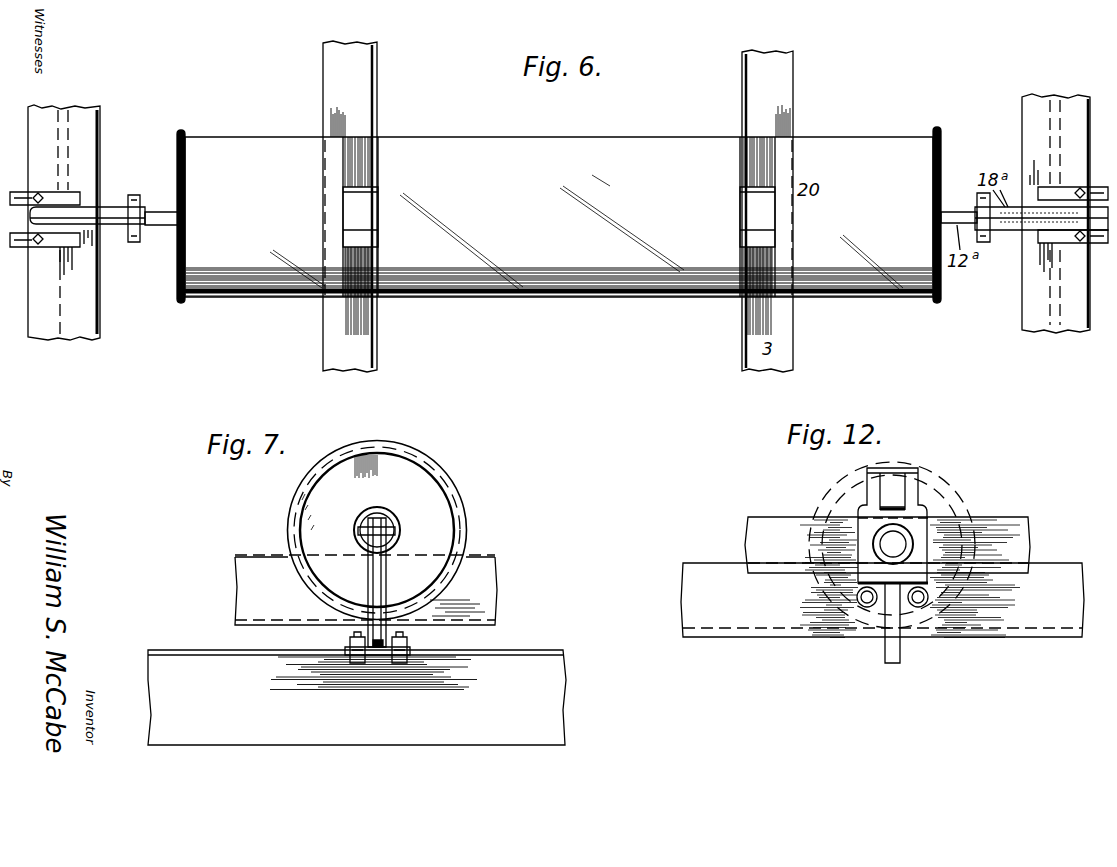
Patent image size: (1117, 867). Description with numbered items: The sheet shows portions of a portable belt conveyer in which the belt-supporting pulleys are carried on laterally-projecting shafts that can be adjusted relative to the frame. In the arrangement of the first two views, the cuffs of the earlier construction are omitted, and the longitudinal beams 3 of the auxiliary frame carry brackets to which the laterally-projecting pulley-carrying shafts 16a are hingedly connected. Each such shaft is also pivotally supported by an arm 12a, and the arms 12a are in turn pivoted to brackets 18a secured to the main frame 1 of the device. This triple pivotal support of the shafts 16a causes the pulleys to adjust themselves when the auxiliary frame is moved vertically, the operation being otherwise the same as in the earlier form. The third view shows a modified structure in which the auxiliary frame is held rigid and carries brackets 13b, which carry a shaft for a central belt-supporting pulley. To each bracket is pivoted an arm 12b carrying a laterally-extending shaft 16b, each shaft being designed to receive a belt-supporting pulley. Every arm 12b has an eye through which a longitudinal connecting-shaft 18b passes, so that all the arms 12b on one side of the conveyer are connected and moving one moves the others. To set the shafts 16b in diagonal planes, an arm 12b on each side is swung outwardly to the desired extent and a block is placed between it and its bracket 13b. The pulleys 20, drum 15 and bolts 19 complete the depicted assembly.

In FIG. 6, the main frame 1 is at (55, 222).
In FIG. 7, the main frame 1 is at (357, 697).
In FIG. 6, the longitudinal beams 3 is at (350, 206).
In FIG. 7, the longitudinal beams 3 is at (366, 590).
In FIG. 12, the longitudinal beams 3 is at (882, 579).
In FIG. 6, the arms 12a is at (167, 224).
In FIG. 7, the arms 12a is at (388, 630).
In FIG. 12, the arm 12b is at (900, 645).
In FIG. 12, the brackets 13b is at (826, 485).
In FIG. 6, the drum 15 is at (559, 217).
In FIG. 12, the drum 15 is at (975, 479).
In FIG. 7, the laterally-projecting pulley-carrying shafts 16a is at (402, 514).
In FIG. 12, the laterally-extending shaft 16b is at (930, 540).
In FIG. 6, the brackets 18a is at (110, 226).
In FIG. 7, the brackets 18a is at (372, 570).
In FIG. 12, the longitudinal connecting-shaft 18b is at (975, 530).
In FIG. 7, the bolts 19 is at (397, 665).
In FIG. 6, the drum head 20 is at (251, 216).
In FIG. 7, the drum head 20 is at (463, 532).